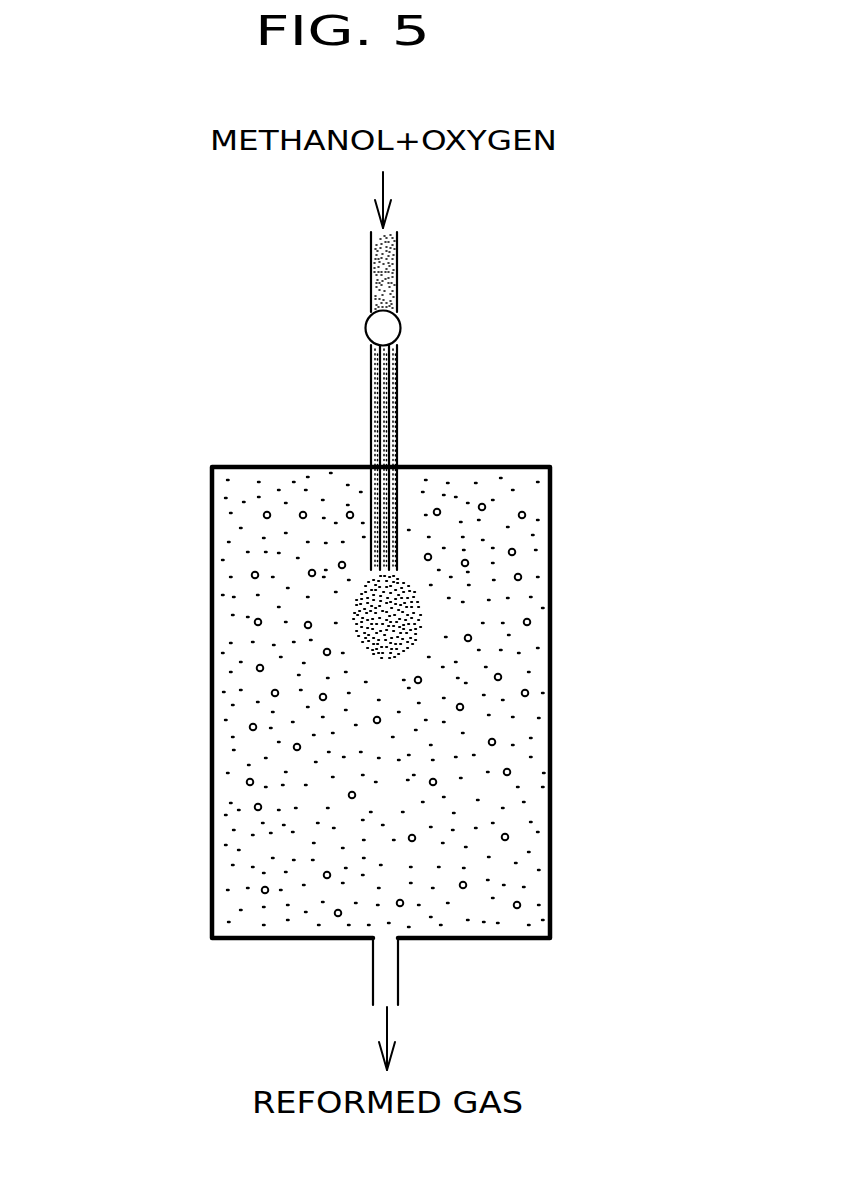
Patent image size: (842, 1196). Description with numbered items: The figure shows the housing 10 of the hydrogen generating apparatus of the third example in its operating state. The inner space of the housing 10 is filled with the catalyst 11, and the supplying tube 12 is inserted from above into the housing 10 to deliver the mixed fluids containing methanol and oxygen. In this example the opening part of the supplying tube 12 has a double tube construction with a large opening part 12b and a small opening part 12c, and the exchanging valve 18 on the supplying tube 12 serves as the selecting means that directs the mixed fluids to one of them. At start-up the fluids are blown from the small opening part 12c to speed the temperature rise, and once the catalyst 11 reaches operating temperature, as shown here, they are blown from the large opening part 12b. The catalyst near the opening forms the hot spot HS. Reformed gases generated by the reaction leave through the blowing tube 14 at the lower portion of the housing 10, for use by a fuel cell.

The housing 10 is at (212, 552).
The catalyst 11 is at (254, 623).
The supplying tube 12 is at (397, 270).
The large opening part 12b is at (398, 567).
The small opening part 12c is at (372, 567).
The blowing tube 14 is at (393, 985).
The exchanging valve 18 is at (366, 331).
The hot spot HS is at (420, 614).